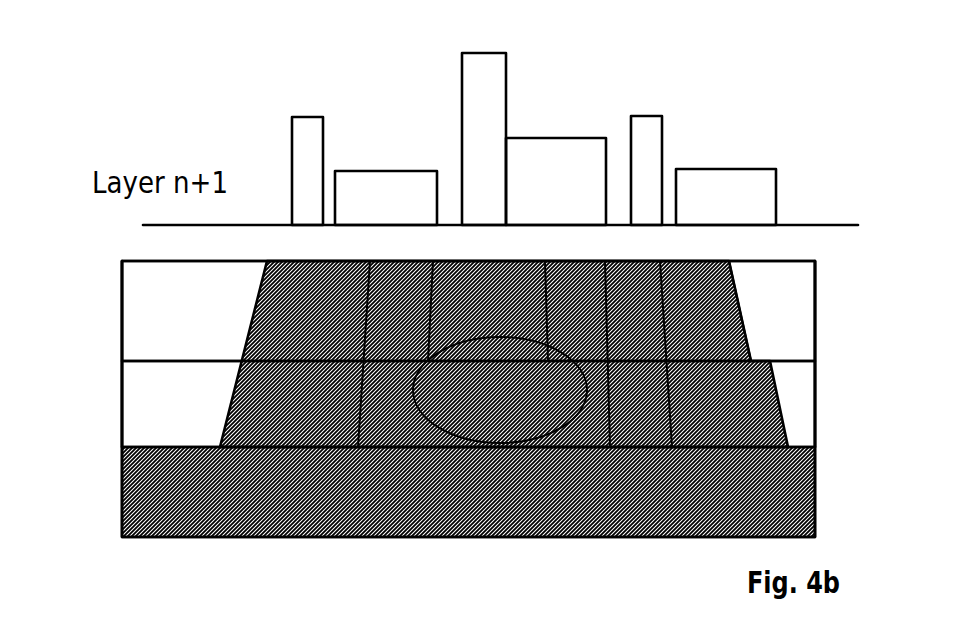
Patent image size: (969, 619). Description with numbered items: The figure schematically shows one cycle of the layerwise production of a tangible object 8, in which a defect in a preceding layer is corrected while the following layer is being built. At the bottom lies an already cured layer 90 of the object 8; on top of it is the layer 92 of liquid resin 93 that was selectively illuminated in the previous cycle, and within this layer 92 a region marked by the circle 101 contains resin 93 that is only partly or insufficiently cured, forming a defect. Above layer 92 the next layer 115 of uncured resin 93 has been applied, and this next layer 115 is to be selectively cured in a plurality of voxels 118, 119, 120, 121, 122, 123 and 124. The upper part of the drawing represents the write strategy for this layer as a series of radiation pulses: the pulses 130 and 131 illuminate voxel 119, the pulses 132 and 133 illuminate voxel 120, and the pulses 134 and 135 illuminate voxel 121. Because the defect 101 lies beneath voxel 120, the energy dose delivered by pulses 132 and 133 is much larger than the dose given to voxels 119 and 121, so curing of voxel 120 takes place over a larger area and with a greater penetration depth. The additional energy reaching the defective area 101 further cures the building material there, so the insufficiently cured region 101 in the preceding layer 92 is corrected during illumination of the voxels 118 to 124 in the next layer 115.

The tangible object 8 is at (504, 411).
The cured layer 90 is at (122, 497).
The layer 92 is at (122, 382).
The resin 93 is at (135, 335).
The circle indicating defect 101 is at (475, 540).
The next layer 115 is at (122, 295).
The voxel 118 is at (300, 261).
The voxel 119 is at (392, 261).
The voxel 120 is at (478, 261).
The voxel 121 is at (545, 261).
The voxel 122 is at (606, 261).
The voxel 123 is at (657, 261).
The voxel 124 is at (733, 282).
The pulse 130 is at (292, 138).
The pulse 131 is at (373, 171).
The pulse 132 is at (506, 97).
The pulse 133 is at (566, 138).
The pulse 134 is at (662, 130).
The pulse 135 is at (733, 169).